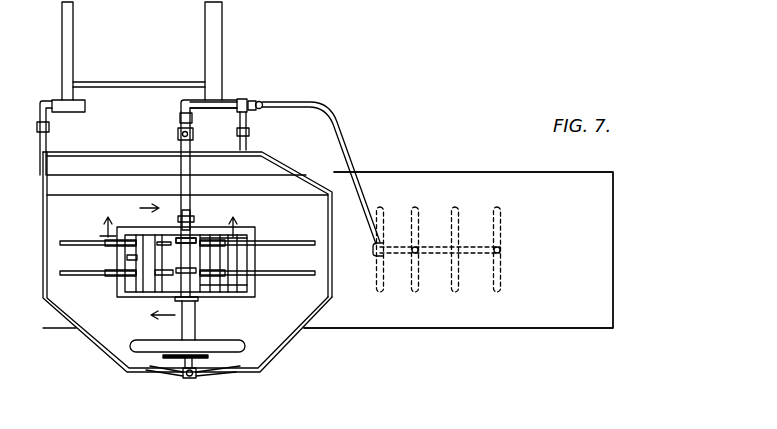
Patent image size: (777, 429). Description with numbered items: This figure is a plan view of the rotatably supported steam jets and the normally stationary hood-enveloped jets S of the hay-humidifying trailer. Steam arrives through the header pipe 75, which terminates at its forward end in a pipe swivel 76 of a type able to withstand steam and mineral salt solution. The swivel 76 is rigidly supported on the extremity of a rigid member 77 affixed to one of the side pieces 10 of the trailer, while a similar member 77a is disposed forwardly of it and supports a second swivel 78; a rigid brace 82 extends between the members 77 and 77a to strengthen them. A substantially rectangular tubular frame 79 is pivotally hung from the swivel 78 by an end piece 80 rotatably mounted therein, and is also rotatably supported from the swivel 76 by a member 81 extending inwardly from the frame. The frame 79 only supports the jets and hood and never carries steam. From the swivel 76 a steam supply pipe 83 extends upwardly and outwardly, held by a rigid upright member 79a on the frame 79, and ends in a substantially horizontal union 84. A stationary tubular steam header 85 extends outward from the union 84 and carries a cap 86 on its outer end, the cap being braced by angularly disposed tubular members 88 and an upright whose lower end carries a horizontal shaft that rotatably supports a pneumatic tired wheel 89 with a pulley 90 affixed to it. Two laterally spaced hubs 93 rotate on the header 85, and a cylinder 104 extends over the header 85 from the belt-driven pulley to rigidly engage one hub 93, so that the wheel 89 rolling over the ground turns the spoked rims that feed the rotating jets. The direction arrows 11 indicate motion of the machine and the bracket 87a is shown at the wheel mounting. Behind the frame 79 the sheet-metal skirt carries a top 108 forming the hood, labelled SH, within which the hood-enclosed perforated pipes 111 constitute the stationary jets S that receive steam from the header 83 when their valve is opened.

The rigid member 77a is at (70, 37).
The rigid member 77 is at (218, 52).
The brace 82 is at (166, 64).
The swivel 78 is at (77, 106).
The end piece 80 is at (40, 135).
The union 84 is at (181, 112).
The pipe swivel 76 is at (222, 109).
The header pipe 75 is at (256, 102).
The member 81 is at (247, 132).
The steam supply pipe 83 is at (180, 134).
The rigid upright member 79a is at (165, 157).
The tubular frame 79 is at (47, 224).
The hub 93 is at (181, 238).
The tubular steam header 85 is at (193, 237).
The direction arrows 11 is at (179, 216).
The side piece 10 is at (149, 260).
The cylinder 104 is at (196, 316).
The pneumatic tired wheel 89 is at (235, 345).
The shaft 88 is at (212, 378).
The strap 87a is at (160, 373).
The cap 86 is at (186, 380).
The pulley 90 is at (230, 376).
The sheet SH is at (448, 172).
The top 108 is at (560, 300).
The perforated pipes 111 is at (500, 226).
The stationary jets S is at (440, 288).